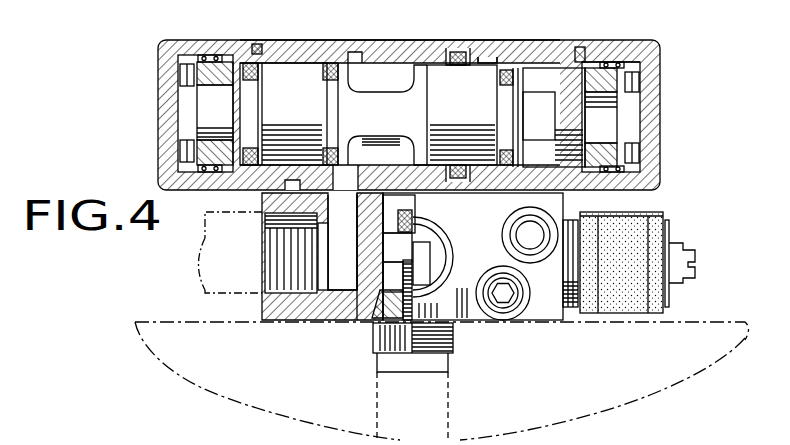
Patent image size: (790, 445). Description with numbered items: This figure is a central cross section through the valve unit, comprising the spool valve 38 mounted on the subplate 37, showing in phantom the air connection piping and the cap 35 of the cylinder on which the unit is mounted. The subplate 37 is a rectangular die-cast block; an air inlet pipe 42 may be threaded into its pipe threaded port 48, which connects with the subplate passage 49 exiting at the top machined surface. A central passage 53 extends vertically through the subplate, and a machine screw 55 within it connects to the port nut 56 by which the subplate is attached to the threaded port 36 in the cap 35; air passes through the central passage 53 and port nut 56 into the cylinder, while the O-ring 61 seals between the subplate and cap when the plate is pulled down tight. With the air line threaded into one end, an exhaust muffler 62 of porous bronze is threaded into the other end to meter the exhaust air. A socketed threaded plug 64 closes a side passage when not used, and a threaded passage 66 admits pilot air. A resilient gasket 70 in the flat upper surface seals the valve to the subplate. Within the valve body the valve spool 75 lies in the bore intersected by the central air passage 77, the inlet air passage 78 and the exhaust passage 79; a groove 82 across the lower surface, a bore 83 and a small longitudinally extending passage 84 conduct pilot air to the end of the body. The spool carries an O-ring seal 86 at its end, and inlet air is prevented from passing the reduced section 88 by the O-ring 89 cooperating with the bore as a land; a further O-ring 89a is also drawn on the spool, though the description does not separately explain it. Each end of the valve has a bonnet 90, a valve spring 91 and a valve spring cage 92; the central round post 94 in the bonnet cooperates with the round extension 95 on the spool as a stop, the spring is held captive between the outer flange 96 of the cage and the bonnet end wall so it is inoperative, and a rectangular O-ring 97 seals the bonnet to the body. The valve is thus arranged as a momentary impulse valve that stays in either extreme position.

The cap 35 is at (628, 369).
The port 36 is at (445, 402).
The subplate 37 is at (490, 256).
The spool valve 38 is at (430, 42).
The air inlet pipe 42 is at (197, 262).
The pipe threaded port 48 is at (265, 290).
The subplate passage 49 is at (348, 256).
The central passage 53 is at (378, 318).
The machine screw 55 is at (414, 226).
The port nut 56 is at (388, 363).
The O-ring 61 is at (370, 332).
The exhaust muffler 62 is at (668, 206).
The socketed threaded plug 64 is at (503, 305).
The threaded passage 66 is at (528, 238).
The resilient gasket 70 is at (288, 192).
The valve spool 75 is at (475, 109).
The central air passage 77 is at (420, 220).
The inlet air passage 78 is at (348, 226).
The exhaust passage 79 is at (455, 223).
The groove 82 is at (348, 265).
The bore 83 is at (531, 176).
The longitudinally extending passage 84 is at (562, 176).
The O-ring seal 86 is at (258, 68).
The reduced section 88 is at (400, 129).
The O-ring 89 is at (352, 50).
The passage 89a is at (485, 56).
The bonnet 90 is at (158, 50).
The valve spring 91 is at (178, 150).
The valve spring cage 92 is at (211, 54).
The central round post 94 is at (178, 90).
The round extension 95 is at (178, 112).
The outer flange 96 is at (610, 50).
The rectangular O-ring 97 is at (257, 44).